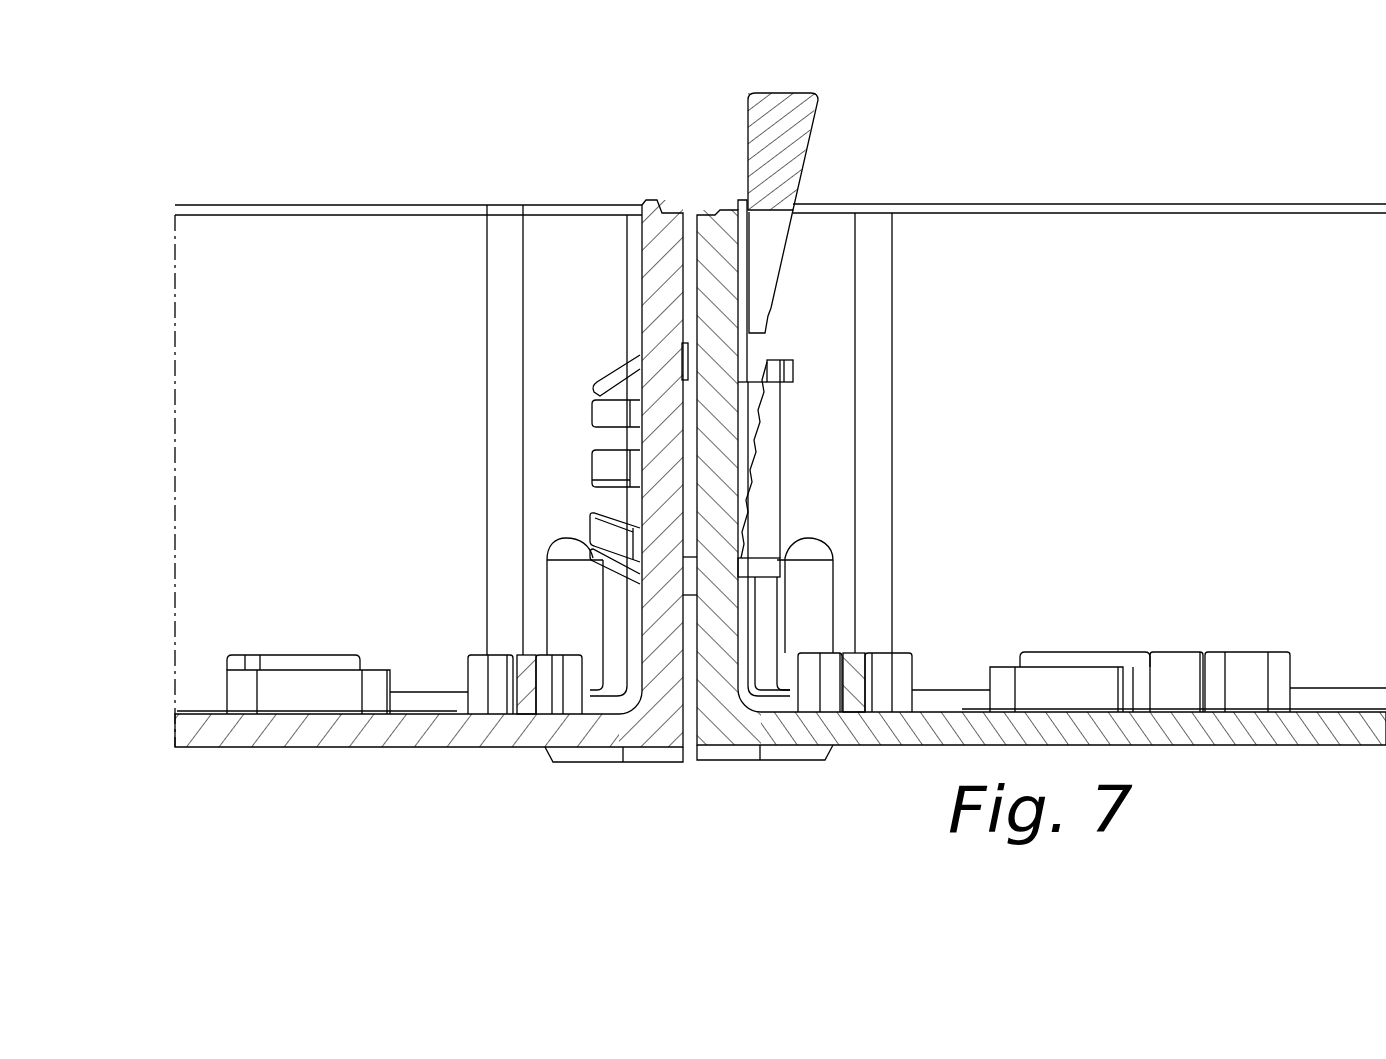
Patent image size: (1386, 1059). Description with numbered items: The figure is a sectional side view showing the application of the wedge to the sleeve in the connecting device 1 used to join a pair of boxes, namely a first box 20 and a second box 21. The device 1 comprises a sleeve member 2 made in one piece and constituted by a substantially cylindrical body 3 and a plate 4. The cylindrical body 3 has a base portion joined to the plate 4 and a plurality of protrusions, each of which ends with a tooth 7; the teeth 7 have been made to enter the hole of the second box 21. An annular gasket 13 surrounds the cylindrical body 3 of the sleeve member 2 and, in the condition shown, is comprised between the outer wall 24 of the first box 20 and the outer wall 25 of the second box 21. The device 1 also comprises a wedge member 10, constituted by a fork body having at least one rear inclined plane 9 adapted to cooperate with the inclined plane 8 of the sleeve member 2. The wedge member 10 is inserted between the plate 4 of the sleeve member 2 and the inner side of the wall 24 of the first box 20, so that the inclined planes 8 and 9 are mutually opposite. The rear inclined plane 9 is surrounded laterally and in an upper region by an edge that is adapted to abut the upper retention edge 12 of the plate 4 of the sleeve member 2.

The connecting device 1 is at (893, 163).
The sleeve member 2 is at (834, 415).
The cylindrical body 3 is at (592, 401).
The plate 4 is at (782, 452).
The tooth 7 is at (604, 372).
The inclined plane 8 is at (752, 478).
The rear inclined plane 9 is at (773, 290).
The wedge member 10 is at (787, 92).
The upper retention edge 12 is at (784, 368).
The annular gasket 13 is at (688, 353).
The first box 20 is at (1050, 202).
The second box 21 is at (428, 204).
The outer wall of the first box 24 is at (715, 650).
The outer wall of the second box 25 is at (662, 637).